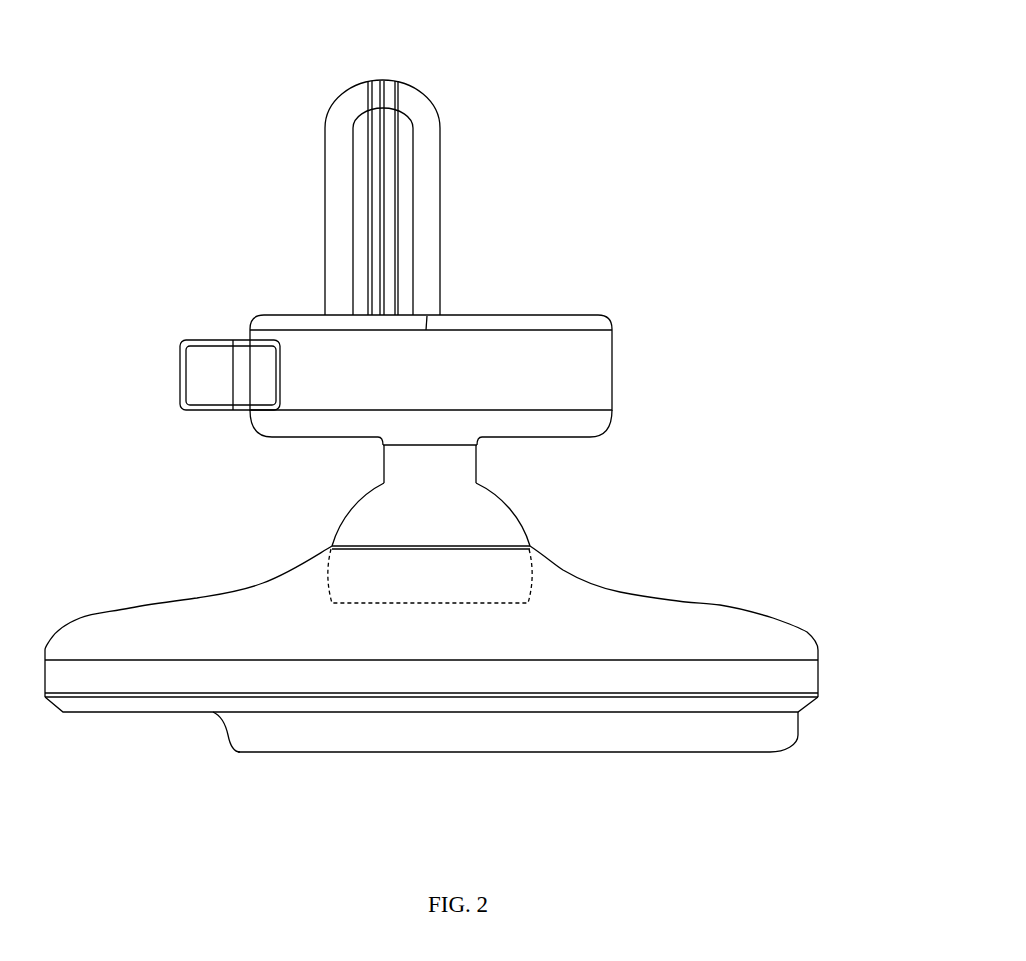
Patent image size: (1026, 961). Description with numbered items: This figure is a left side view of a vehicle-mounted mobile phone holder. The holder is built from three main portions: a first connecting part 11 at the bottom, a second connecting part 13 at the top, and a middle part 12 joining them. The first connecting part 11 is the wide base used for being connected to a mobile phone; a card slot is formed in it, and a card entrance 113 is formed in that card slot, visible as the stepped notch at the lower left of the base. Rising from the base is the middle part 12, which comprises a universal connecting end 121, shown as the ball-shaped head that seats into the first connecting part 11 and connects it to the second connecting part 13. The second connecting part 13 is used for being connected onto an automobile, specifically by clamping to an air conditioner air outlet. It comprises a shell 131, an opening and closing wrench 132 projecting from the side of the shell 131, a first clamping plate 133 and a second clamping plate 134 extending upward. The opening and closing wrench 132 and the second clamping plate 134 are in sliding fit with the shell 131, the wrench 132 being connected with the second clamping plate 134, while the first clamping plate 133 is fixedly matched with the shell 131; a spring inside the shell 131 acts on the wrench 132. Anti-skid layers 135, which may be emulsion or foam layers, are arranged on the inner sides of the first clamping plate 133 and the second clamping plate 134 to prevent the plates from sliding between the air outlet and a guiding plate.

The first connecting part 11 is at (469, 658).
The card entrance 113 is at (223, 735).
The middle part 12 is at (448, 513).
The universal connecting end 121 is at (342, 522).
The second connecting part 13 is at (400, 351).
The shell 131 is at (513, 348).
The opening and closing wrench 132 is at (182, 372).
The first clamping plate 133 is at (323, 130).
The second clamping plate 134 is at (443, 128).
The anti-skid layers 135 is at (373, 120).